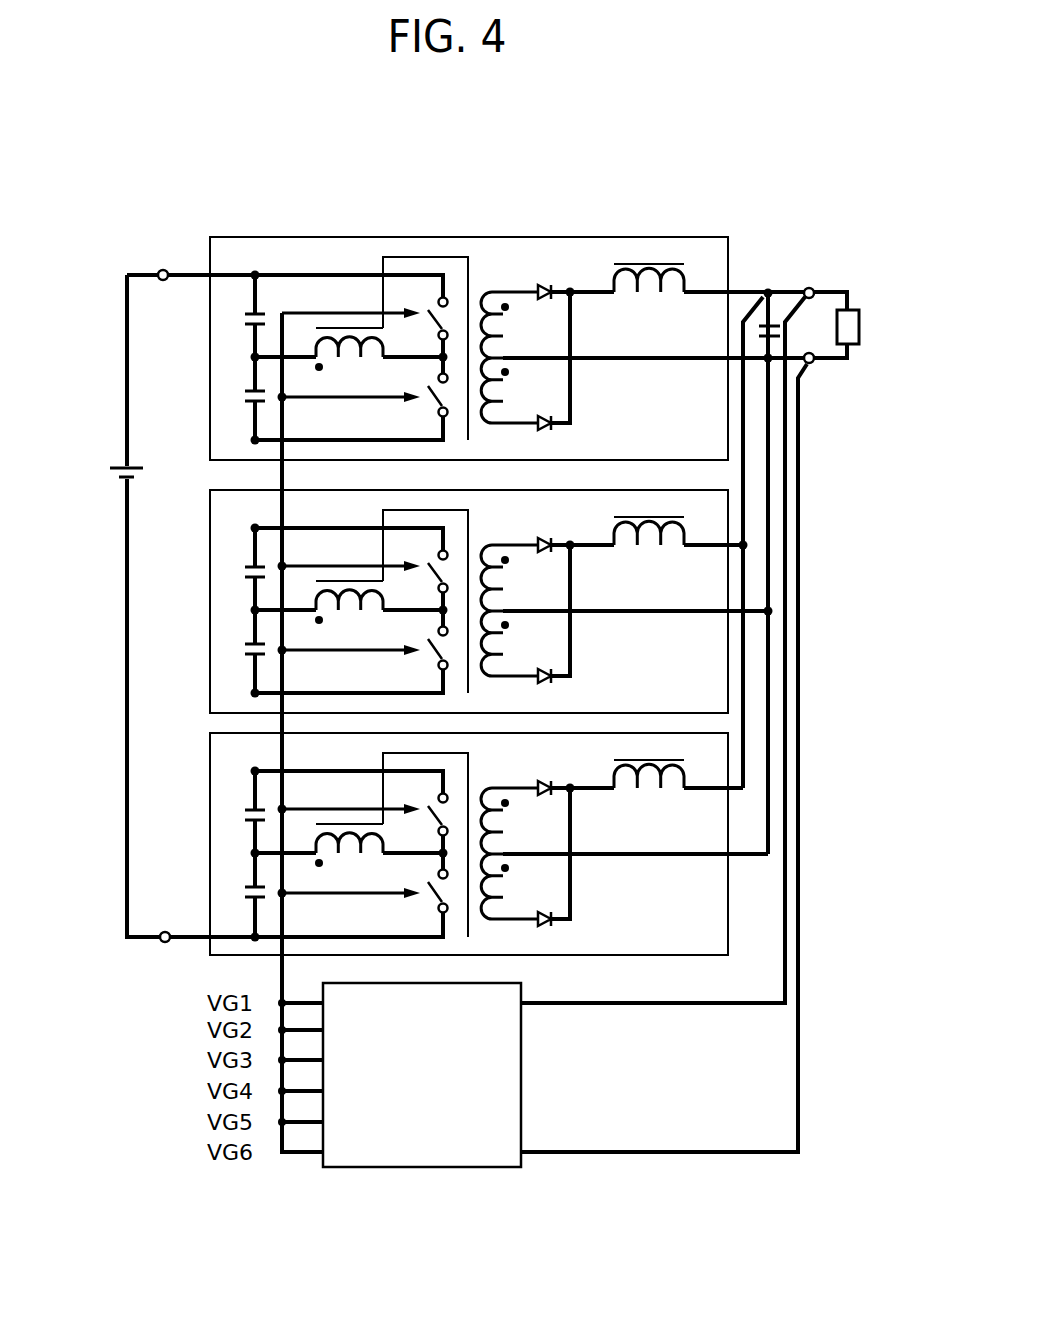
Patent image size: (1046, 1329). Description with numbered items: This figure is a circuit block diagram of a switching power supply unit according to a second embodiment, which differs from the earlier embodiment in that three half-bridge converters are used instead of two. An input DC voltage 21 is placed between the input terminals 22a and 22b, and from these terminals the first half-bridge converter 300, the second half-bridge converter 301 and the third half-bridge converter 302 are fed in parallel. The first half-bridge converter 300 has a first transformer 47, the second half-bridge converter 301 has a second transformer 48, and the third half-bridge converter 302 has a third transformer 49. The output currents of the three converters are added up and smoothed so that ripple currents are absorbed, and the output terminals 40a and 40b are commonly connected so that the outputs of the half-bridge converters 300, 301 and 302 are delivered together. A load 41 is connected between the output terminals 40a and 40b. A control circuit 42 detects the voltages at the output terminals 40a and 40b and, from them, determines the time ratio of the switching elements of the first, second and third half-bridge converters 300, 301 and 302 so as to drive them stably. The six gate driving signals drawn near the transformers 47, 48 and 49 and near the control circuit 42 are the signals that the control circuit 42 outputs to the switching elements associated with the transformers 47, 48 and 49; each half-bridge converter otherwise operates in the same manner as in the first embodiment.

The input terminal 22a is at (162, 270).
The input terminal 22b is at (163, 942).
The input DC voltage 21 is at (119, 462).
The first half-bridge converter 300 is at (225, 237).
The second half-bridge converter 301 is at (210, 622).
The third half-bridge converter 302 is at (210, 852).
The first transformer 47 is at (350, 327).
The second transformer 48 is at (353, 581).
The third transformer 49 is at (353, 824).
The output terminal 40a is at (807, 288).
The output terminal 40b is at (812, 363).
The load 41 is at (852, 308).
The control circuit 42 is at (392, 1168).